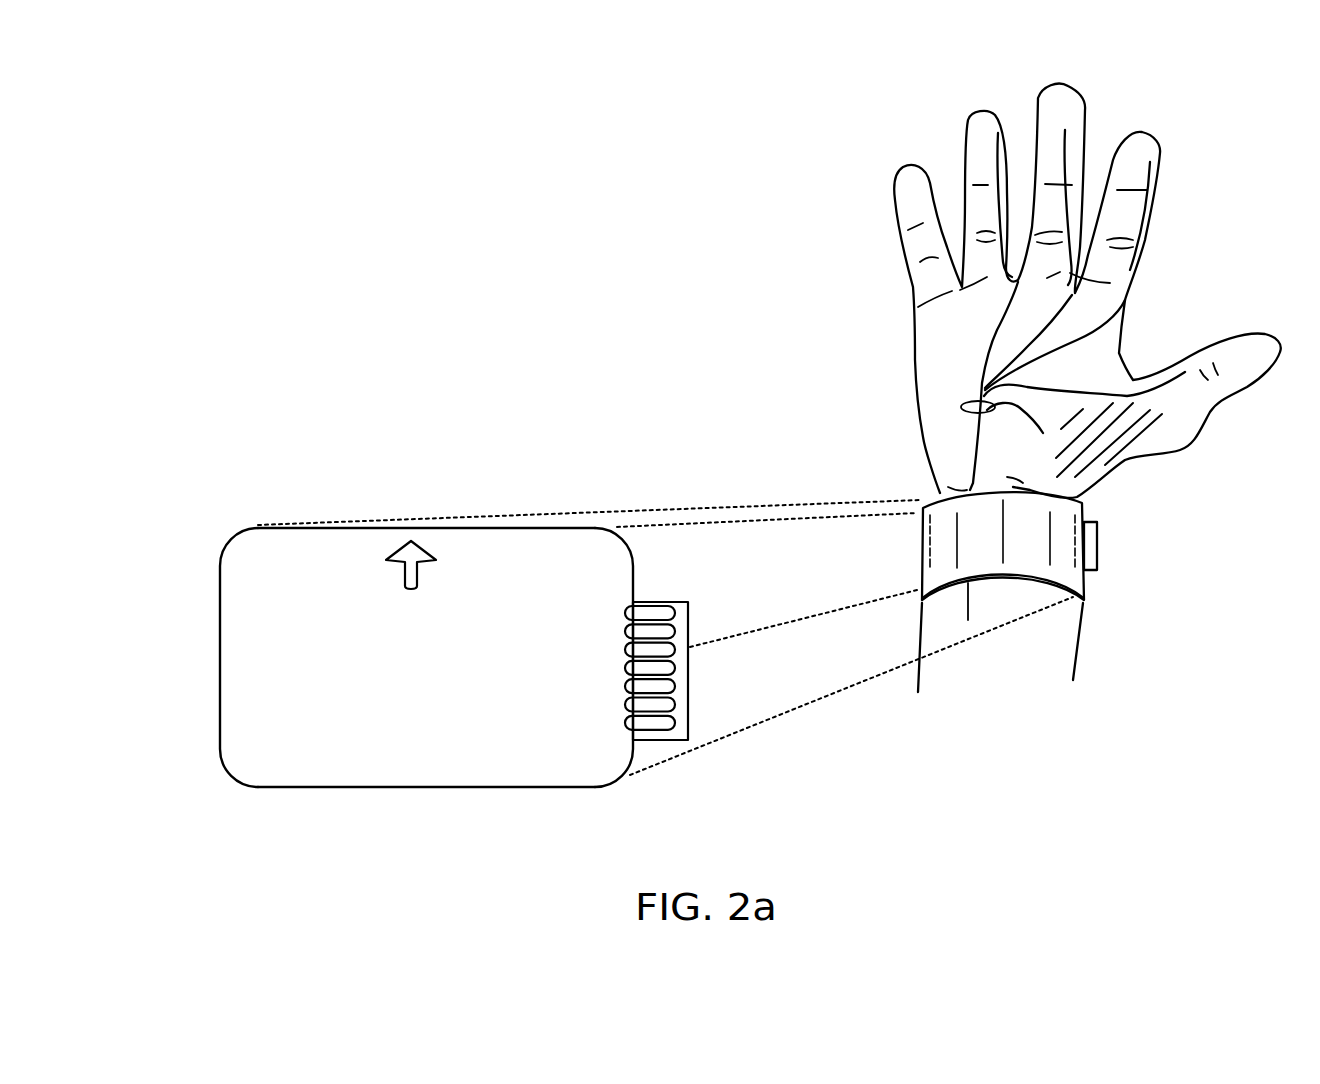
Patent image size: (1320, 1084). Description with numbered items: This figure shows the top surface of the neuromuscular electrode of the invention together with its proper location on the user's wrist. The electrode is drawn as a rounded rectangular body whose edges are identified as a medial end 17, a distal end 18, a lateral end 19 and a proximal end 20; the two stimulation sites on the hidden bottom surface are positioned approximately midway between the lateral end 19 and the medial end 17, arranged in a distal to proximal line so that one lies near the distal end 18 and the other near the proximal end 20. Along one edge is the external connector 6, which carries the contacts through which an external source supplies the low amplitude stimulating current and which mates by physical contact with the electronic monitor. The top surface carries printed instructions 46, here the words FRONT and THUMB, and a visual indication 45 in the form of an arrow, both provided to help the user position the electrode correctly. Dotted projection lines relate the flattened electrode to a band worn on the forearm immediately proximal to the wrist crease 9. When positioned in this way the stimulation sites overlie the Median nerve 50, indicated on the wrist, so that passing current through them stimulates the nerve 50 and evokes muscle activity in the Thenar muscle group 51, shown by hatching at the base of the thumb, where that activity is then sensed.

The connector 6 is at (655, 743).
The wrist crease 9 is at (1003, 490).
The medial end 17 is at (220, 597).
The distal end 18 is at (393, 520).
The lateral end 19 is at (636, 575).
The proximal end 20 is at (423, 790).
The visual indications 45 is at (440, 560).
The printed instructions 46 is at (358, 610).
The Median nerve 50 is at (963, 405).
The Thenar muscle group 51 is at (1107, 452).